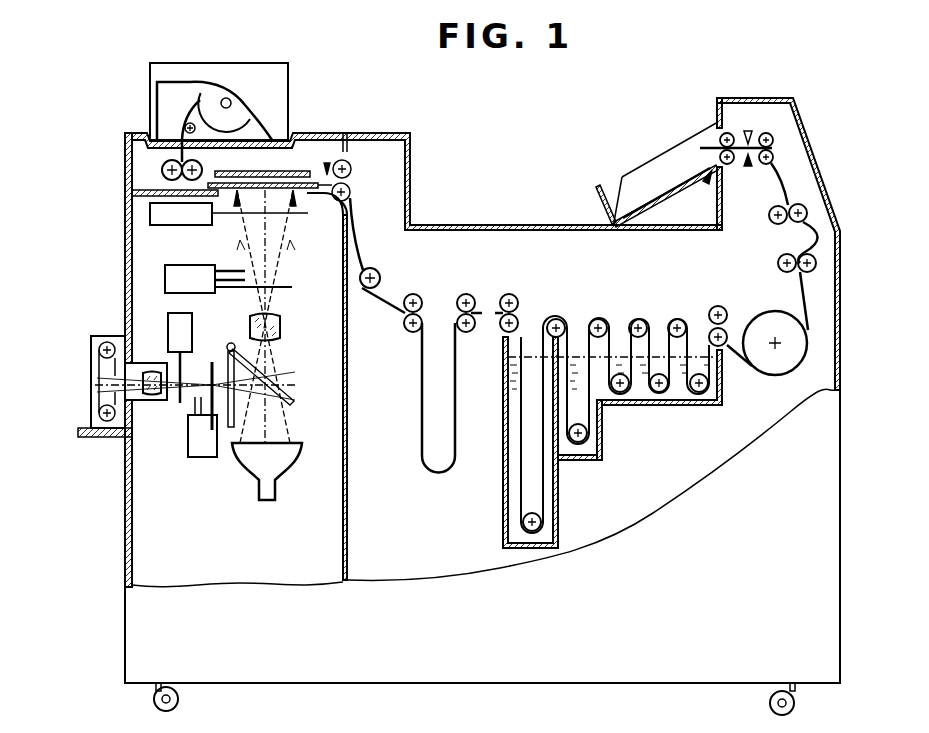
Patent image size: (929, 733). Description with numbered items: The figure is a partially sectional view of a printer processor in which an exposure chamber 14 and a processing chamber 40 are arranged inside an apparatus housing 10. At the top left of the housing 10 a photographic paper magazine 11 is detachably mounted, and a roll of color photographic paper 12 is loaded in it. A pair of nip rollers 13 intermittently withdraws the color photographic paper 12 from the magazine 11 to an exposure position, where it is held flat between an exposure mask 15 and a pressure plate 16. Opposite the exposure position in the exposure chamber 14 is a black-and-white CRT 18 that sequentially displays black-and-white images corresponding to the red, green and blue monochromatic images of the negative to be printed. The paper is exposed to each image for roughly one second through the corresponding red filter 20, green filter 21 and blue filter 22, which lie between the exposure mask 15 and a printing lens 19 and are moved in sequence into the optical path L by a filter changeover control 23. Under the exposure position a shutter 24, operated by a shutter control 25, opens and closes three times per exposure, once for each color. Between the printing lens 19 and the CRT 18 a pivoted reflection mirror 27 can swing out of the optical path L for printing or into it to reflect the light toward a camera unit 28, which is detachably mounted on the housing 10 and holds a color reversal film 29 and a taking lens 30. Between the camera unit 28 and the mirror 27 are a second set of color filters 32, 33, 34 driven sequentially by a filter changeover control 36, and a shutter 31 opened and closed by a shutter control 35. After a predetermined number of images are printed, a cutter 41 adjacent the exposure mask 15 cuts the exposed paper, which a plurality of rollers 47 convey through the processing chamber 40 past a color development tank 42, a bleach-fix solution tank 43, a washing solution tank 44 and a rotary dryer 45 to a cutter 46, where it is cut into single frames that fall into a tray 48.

The apparatus housing 10 is at (850, 507).
The photographic paper magazine 11 is at (238, 76).
The color photographic paper 12 is at (186, 122).
The nip rollers 13 is at (162, 169).
The exposure chamber 14 is at (125, 492).
The exposure mask 15 is at (311, 183).
The pressure plate 16 is at (295, 170).
The black-and-white CRT 18 is at (283, 462).
The printing lens 19 is at (283, 328).
The red filter 20 is at (292, 288).
The green filter 21 is at (230, 290).
The blue filter 22 is at (230, 268).
The filter changeover control 23 is at (182, 263).
The shutter 24 is at (293, 222).
The shutter control 25 is at (150, 214).
The reflection mirror 27 is at (296, 392).
The camera unit 28 is at (82, 352).
The color reversal film 29 is at (97, 383).
The taking lens 30 is at (150, 370).
The shutter 31 is at (178, 402).
The color filter 32 is at (212, 360).
The color filter 33 is at (190, 430).
The color filter 34 is at (192, 413).
The shutter control 35 is at (170, 313).
The filter changeover control 36 is at (205, 458).
The processing chamber 40 is at (512, 250).
The cutter 41 is at (334, 160).
The color development tank 42 is at (548, 505).
The bleach-fix solution tank 43 is at (588, 447).
The washing solution tank 44 is at (718, 405).
The rotary dryer 45 is at (773, 372).
The cutter 46 is at (749, 128).
The rollers 47 is at (411, 292).
The tray 48 is at (686, 148).
The optical path L is at (280, 262).